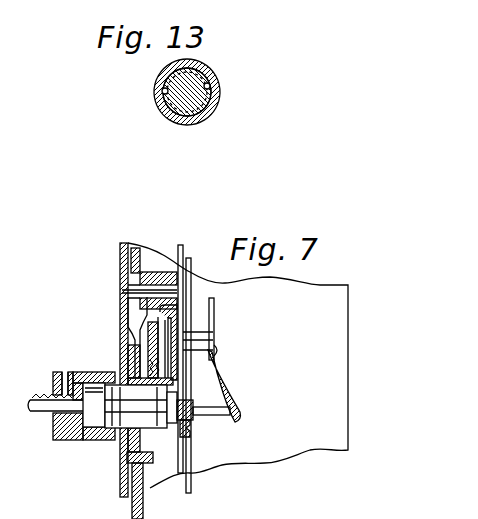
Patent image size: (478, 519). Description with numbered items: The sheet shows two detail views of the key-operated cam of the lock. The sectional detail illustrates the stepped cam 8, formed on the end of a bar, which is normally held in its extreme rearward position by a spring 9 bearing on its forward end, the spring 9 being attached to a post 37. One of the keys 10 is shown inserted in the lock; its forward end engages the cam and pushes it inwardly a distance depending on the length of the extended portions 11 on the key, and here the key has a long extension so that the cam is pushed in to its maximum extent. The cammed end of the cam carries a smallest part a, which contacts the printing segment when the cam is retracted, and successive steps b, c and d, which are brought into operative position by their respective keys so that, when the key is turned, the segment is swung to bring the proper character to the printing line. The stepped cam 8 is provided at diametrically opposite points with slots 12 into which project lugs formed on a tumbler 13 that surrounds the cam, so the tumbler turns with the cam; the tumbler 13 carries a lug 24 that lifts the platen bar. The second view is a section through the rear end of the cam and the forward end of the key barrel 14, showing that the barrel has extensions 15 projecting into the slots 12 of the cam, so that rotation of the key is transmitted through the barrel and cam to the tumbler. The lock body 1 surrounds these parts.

In FIG. 13, the key barrel 14 is at (190, 68).
In FIG. 7, the key barrel 14 is at (98, 372).
In FIG. 13, the stepped cam 8 is at (197, 78).
In FIG. 7, the stepped cam 8 is at (128, 438).
In FIG. 13, the extensions 15 is at (160, 98).
In FIG. 7, the casing 1 is at (238, 365).
In FIG. 7, the tumbler 13 is at (125, 465).
In FIG. 7, the lug 24 is at (150, 468).
In FIG. 7, the keys 10 is at (48, 406).
In FIG. 7, the extended portions 11 is at (97, 415).
In FIG. 7, the slots 12 is at (108, 430).
In FIG. 7, the step d is at (177, 400).
In FIG. 7, the step b is at (193, 410).
In FIG. 7, the smallest part a is at (223, 412).
In FIG. 7, the step c is at (188, 428).
In FIG. 7, the spring 9 is at (217, 383).
In FIG. 7, the post 37 is at (196, 342).